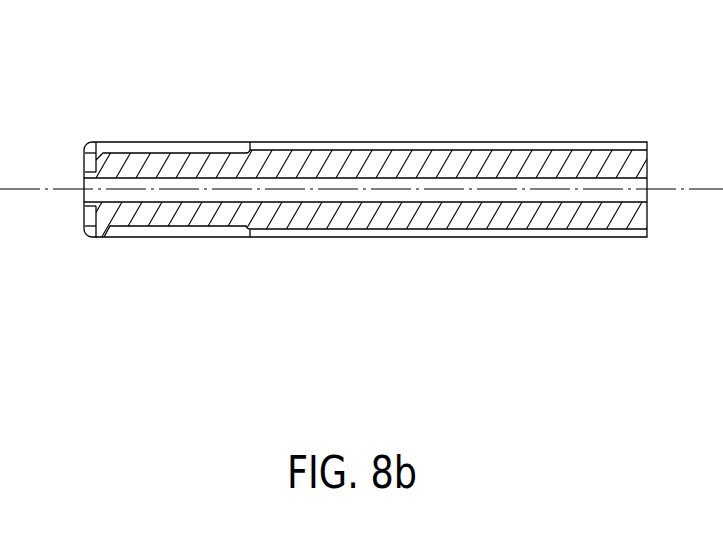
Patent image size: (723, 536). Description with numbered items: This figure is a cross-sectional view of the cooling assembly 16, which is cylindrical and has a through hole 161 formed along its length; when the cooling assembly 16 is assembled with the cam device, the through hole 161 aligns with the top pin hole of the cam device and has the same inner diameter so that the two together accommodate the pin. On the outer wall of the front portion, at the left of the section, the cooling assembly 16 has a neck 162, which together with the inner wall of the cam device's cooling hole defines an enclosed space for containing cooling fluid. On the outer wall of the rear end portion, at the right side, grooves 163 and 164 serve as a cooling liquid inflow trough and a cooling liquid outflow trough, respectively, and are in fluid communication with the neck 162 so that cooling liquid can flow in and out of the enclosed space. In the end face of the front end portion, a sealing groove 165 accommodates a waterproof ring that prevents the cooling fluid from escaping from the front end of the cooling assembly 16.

The cooling assembly 16 is at (244, 83).
The through hole 161 is at (650, 182).
The neck 162 is at (183, 153).
The groove 163 is at (367, 142).
The groove 164 is at (337, 237).
The sealing groove 165 is at (84, 160).